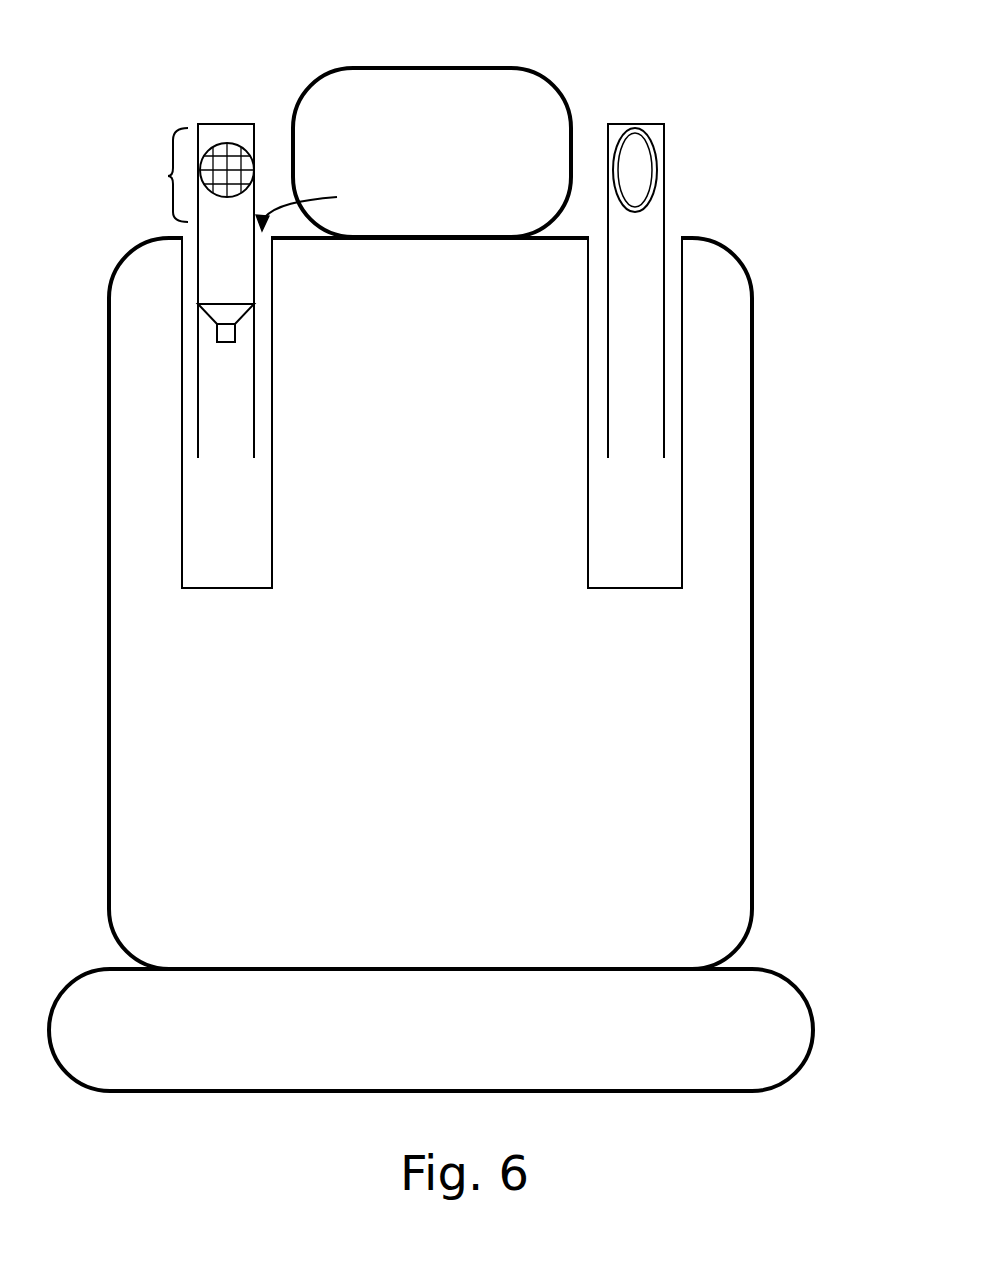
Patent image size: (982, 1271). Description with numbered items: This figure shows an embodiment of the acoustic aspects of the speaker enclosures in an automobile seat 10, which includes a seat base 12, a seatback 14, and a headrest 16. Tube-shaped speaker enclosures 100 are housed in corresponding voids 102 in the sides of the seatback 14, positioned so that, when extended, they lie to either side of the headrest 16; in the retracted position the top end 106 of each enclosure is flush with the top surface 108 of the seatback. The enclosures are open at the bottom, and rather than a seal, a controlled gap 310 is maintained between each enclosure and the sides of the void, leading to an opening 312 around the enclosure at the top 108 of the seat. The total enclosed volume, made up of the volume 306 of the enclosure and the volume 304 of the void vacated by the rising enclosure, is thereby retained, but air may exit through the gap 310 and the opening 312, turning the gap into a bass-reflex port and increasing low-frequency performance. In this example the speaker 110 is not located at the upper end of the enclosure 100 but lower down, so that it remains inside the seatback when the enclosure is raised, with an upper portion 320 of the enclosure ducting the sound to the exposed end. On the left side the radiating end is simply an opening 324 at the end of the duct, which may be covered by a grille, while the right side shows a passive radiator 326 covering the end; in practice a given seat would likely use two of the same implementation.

The automobile seat 10 is at (812, 247).
The seat base 12 is at (793, 978).
The seatback 14 is at (752, 660).
The headrest 16 is at (552, 70).
The tube-shaped speaker enclosure 100 is at (198, 390).
The void 102 is at (181, 428).
The top end of enclosure 106 is at (198, 124).
The top surface of seatback 108 is at (170, 238).
The speaker 110 is at (236, 331).
The volume of void vacated by rising enclosure 304 is at (249, 542).
The volume of enclosure 306 is at (249, 401).
The controlled gap 310 is at (262, 278).
The opening around enclosure 312 is at (322, 206).
The upper portion of enclosure 320 is at (168, 176).
The opening at end of duct 324 is at (242, 146).
The passive radiator 326 is at (640, 130).